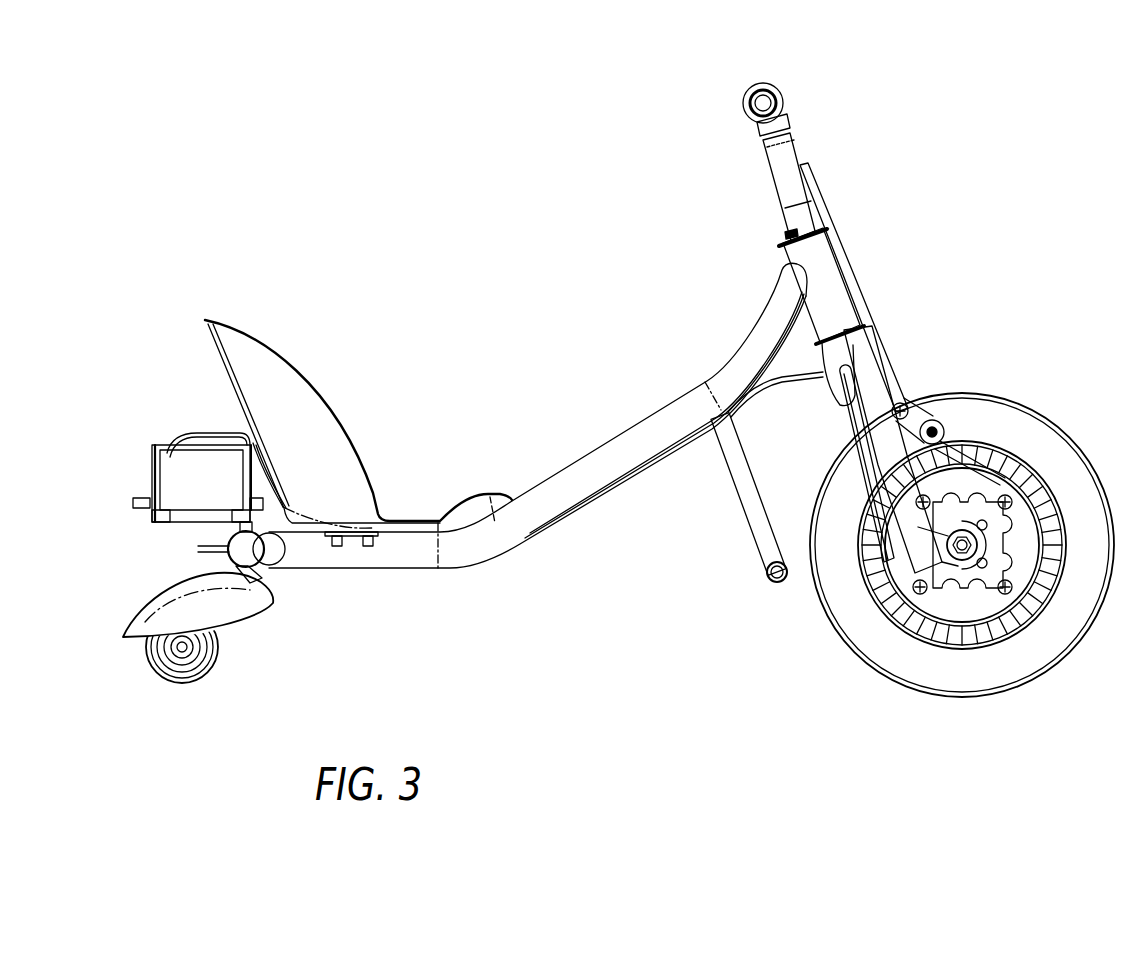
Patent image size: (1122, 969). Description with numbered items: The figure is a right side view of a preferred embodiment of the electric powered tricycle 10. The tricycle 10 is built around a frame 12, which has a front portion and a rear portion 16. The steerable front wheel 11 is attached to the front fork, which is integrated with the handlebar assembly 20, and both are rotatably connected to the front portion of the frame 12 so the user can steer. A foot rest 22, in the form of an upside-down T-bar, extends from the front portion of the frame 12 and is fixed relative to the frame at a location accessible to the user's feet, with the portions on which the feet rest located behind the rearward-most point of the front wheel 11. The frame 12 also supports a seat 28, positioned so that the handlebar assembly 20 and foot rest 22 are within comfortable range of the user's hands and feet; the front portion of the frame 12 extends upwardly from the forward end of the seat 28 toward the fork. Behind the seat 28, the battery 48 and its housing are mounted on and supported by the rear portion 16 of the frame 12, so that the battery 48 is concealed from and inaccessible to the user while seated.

The tricycle 10 is at (1023, 164).
The front wheel 11 is at (983, 392).
The frame 12 is at (525, 490).
The rear portion 16 is at (270, 553).
The handlebar assembly 20 is at (766, 83).
The foot rest 22 is at (768, 584).
The seat 28 is at (262, 342).
The battery 48 is at (158, 440).